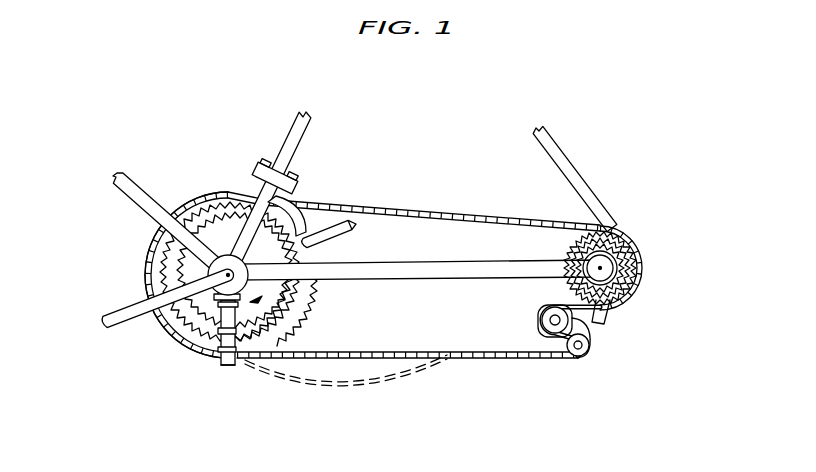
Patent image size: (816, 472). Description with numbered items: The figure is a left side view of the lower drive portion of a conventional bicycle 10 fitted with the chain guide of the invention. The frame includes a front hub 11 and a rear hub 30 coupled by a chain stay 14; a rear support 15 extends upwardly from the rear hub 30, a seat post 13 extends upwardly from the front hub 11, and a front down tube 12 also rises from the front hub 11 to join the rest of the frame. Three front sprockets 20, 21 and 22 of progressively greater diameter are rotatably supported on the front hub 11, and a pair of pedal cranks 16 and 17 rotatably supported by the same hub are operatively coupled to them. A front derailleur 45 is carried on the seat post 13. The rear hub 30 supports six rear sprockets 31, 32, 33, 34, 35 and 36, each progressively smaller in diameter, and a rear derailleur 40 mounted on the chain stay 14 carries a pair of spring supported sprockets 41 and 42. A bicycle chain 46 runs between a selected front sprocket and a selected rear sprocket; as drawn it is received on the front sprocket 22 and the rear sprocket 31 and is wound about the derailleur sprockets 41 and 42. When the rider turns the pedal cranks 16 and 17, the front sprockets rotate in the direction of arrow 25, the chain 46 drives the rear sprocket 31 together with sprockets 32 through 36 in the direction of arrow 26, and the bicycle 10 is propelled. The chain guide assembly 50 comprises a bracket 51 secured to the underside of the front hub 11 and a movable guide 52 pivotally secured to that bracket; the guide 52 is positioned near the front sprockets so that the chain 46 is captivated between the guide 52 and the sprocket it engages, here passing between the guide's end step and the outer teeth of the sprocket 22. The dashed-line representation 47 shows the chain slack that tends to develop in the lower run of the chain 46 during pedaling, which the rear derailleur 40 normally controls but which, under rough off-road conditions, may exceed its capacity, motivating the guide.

The bicycle 10 is at (132, 369).
The front hub 11 is at (148, 279).
The front down tube 12 is at (126, 193).
The seat post 13 is at (292, 144).
The chain stay 14 is at (410, 268).
The rear support 15 is at (570, 164).
The pedal crank 16 is at (163, 339).
The pedal crank 17 is at (328, 212).
The front sprocket 20 is at (303, 310).
The front sprocket 21 is at (300, 324).
The front sprocket 22 is at (300, 335).
The arrow 25 is at (127, 262).
The arrow 26 is at (666, 193).
The rear hub 30 is at (606, 298).
The rear sprocket 31 is at (632, 242).
The rear sprocket 32 is at (635, 253).
The rear sprocket 33 is at (637, 266).
The rear sprocket 34 is at (630, 285).
The rear sprocket 35 is at (625, 297).
The rear sprocket 36 is at (620, 307).
The rear derailleur 40 is at (599, 327).
The spring supported sprocket 41 is at (543, 325).
The spring supported sprocket 42 is at (575, 353).
The front derailleur 45 is at (249, 155).
The bicycle chain 46 is at (462, 357).
The dashed-line representation of chain slack 47 is at (398, 374).
The chain guide assembly 50 is at (305, 298).
The bracket 51 is at (158, 341).
The movable guide 52 is at (228, 366).